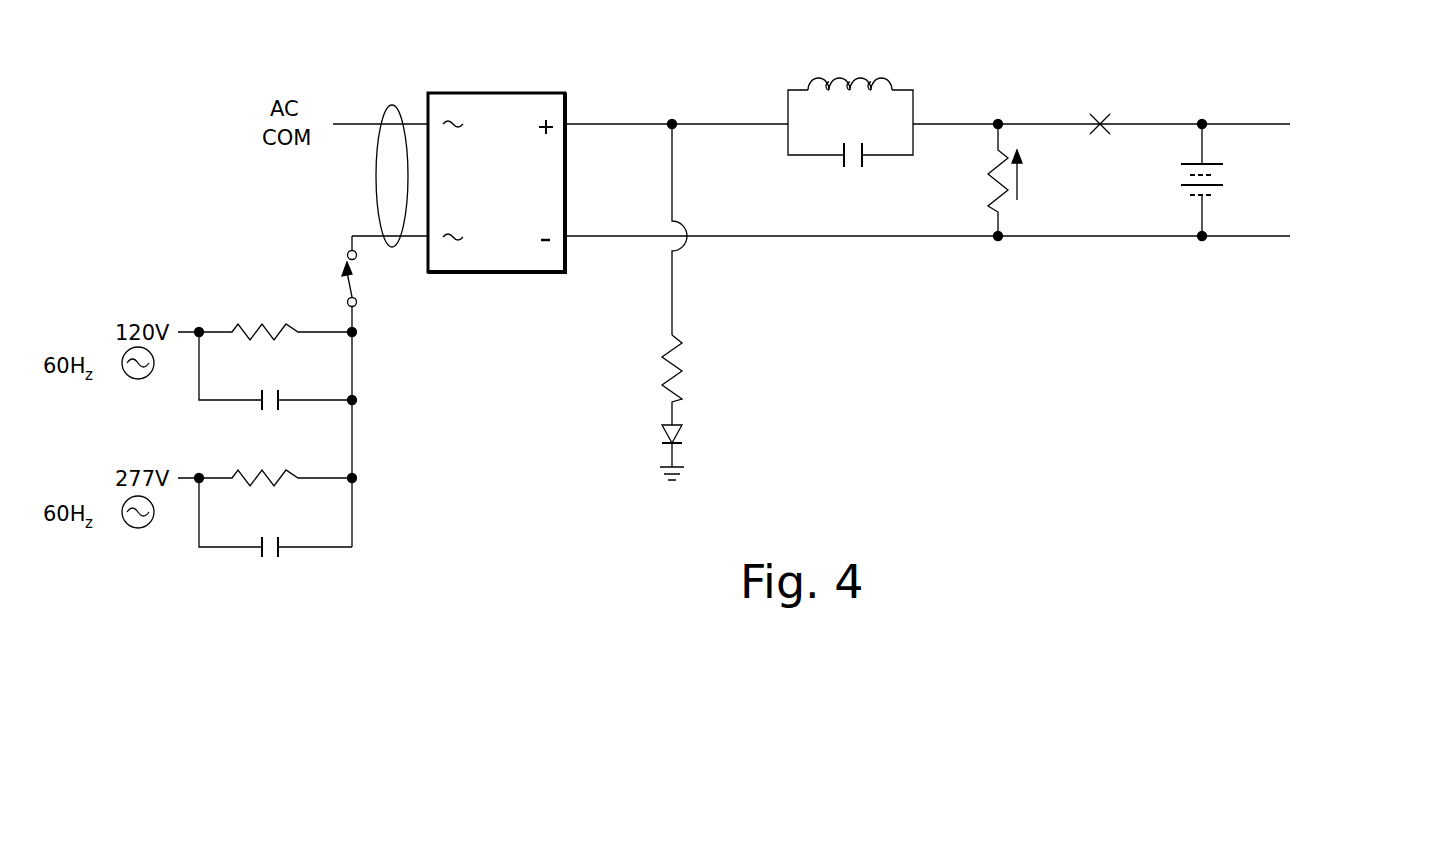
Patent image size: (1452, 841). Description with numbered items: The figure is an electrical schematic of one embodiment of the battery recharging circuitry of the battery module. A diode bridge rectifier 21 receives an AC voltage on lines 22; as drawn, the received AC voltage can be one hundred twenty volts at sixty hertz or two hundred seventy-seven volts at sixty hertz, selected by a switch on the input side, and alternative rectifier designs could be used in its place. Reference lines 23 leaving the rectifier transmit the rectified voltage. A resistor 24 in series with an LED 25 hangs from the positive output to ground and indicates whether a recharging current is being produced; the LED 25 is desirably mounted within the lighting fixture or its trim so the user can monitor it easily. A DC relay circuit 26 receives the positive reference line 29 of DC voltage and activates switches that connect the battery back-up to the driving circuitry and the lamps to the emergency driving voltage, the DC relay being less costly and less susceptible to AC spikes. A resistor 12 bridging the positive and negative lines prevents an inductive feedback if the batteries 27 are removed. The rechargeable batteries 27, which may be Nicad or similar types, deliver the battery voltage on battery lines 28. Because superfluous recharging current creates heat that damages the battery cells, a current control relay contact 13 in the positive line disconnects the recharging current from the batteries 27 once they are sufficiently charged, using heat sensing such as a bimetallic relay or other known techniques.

The resistor 12 is at (1023, 190).
The current control relay contact 13 is at (1104, 118).
The diode bridge rectifier 21 is at (524, 92).
The lines 22 is at (385, 112).
The reference lines 23 is at (597, 124).
The resistor 24 is at (678, 360).
The LED 25 is at (680, 434).
The DC relay circuit 26 is at (915, 110).
The rechargeable batteries 27 is at (1228, 171).
The battery lines 28 is at (1418, 104).
The positive reference line 29 is at (697, 124).